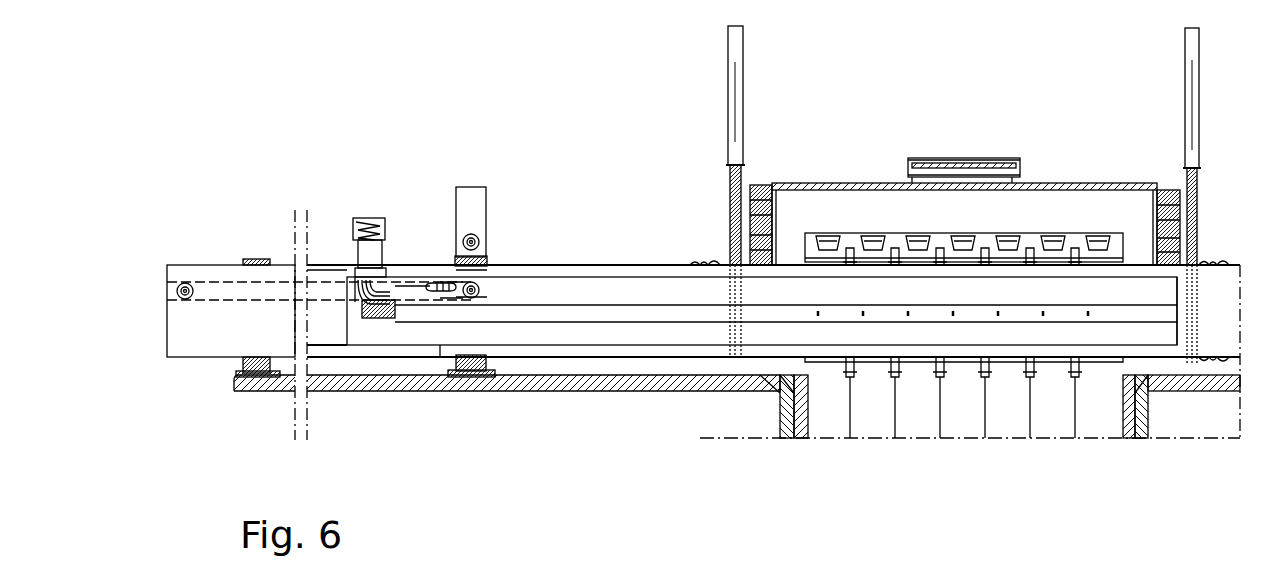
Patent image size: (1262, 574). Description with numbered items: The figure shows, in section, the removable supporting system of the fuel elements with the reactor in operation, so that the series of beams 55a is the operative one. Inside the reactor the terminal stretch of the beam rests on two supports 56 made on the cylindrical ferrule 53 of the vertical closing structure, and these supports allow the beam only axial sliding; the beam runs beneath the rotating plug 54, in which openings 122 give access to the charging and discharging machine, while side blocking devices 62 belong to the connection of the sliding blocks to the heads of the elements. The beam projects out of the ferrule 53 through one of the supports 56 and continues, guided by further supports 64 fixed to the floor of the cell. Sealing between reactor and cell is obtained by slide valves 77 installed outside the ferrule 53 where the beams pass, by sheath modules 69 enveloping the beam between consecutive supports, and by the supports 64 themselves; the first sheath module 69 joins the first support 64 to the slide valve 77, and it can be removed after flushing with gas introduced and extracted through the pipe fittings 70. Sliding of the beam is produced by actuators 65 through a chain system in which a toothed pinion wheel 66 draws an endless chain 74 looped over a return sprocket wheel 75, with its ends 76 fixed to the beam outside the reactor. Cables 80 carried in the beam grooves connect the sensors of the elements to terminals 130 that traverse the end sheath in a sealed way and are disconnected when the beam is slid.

The ferrule 53 is at (735, 235).
The plug 54 is at (1073, 185).
The series of beams 55a is at (612, 290).
The supports 56 is at (745, 372).
The side blocking devices 62 is at (853, 232).
The further supports 64 is at (245, 380).
The actuators 65 is at (494, 237).
The toothed pinion wheel 66 is at (478, 290).
The sheath modules 69 is at (572, 357).
The pipe fittings 70 is at (223, 262).
The endless chain 74 is at (403, 282).
The return sprocket wheel 75 is at (184, 285).
The ends 76 is at (444, 282).
The slide valves 77 is at (738, 122).
The cables 80 is at (380, 320).
The openings 122 is at (925, 165).
The terminals 130 is at (370, 255).